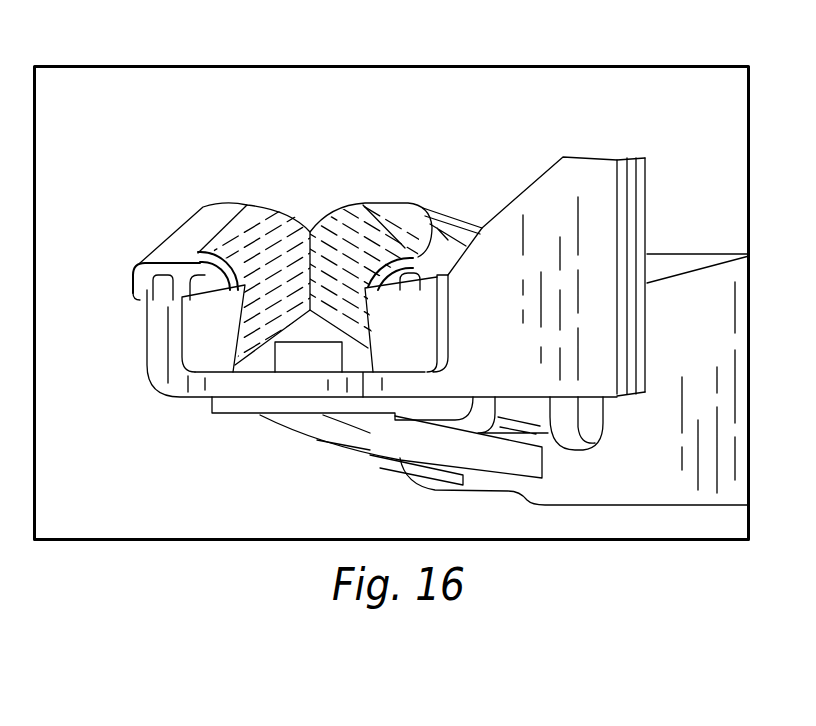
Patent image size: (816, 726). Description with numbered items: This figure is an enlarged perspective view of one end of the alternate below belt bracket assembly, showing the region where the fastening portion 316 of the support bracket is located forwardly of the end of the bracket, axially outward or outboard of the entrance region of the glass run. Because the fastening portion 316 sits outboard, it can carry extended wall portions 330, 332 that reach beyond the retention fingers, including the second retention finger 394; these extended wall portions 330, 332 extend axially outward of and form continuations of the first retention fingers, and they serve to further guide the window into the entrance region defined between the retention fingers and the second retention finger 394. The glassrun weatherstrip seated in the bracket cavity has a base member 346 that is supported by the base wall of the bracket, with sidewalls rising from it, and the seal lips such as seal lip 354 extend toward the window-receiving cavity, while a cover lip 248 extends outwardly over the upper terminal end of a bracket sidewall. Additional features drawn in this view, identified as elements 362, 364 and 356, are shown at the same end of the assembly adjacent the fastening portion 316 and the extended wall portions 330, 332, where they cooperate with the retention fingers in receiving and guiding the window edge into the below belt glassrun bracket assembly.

The fastening portion 316 is at (630, 135).
The first cam member 362 is at (260, 232).
The second cam member 364 is at (360, 236).
The spring plate 354 is at (423, 208).
The contact spring 356 is at (177, 265).
The clip 248 is at (133, 288).
The extended wall portion 330 is at (177, 347).
The second retention finger 394 is at (222, 330).
The base plate 346 is at (245, 405).
The extended wall portion 332 is at (437, 328).